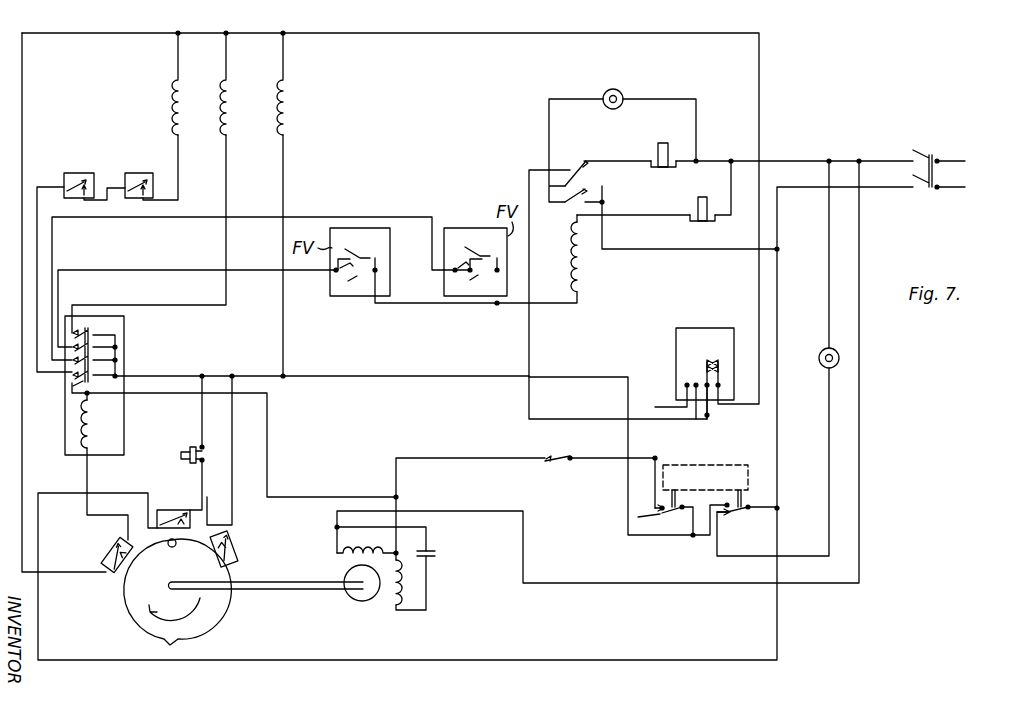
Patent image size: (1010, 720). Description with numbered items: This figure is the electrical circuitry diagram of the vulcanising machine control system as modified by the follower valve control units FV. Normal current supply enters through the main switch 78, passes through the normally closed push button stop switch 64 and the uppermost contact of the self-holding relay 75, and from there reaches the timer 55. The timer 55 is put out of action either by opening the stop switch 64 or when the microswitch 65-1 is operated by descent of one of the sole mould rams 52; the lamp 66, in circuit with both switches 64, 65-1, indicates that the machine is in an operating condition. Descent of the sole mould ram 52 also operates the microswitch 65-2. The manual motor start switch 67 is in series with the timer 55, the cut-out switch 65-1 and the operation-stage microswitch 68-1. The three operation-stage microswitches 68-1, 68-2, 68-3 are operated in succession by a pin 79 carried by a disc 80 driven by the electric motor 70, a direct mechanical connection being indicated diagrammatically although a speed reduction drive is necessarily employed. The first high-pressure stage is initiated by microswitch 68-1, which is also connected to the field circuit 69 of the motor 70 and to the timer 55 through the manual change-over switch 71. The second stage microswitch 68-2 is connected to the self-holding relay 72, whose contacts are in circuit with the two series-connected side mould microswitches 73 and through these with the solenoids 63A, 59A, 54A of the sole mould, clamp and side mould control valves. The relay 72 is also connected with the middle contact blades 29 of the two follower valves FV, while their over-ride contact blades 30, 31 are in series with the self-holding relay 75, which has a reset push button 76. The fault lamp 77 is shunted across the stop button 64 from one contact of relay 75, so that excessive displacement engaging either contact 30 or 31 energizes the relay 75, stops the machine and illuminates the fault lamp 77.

The solenoid 63A is at (171, 111).
The solenoid 59A is at (222, 124).
The solenoid 54A is at (278, 125).
The side mould microswitches 73 is at (136, 173).
The contact blade 30 is at (346, 250).
The middle contact blades 29 is at (348, 274).
The contact blade 31 is at (352, 282).
The self-holding relay 72 is at (118, 380).
The fault lamp 77 is at (614, 90).
The push button stop switch 64 is at (655, 150).
The reset push button 76 is at (696, 216).
The self-holding relay 75 is at (586, 264).
The main switch 78 is at (910, 156).
The lamp 66 is at (821, 350).
The timer 55 is at (720, 328).
The manual change-over switch 71 is at (556, 455).
The sole mould ram 52 is at (705, 486).
The microswitch 65-1 is at (741, 516).
The microswitch 65-2 is at (673, 521).
The manual motor start switch 67 is at (184, 452).
The operation-stage microswitch 68-1 is at (161, 511).
The second operation stage microswitch 68-2 is at (237, 539).
The operation-stage microswitch 68-3 is at (107, 549).
The pin 79 is at (172, 548).
The disc 80 is at (216, 598).
The electric motor 70 is at (343, 577).
The field circuit 69 is at (402, 572).